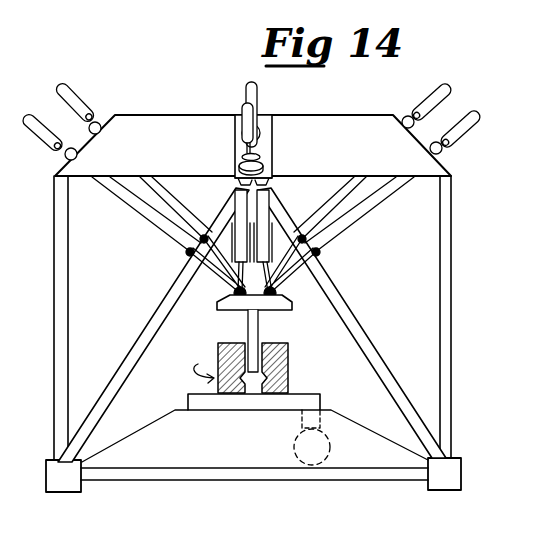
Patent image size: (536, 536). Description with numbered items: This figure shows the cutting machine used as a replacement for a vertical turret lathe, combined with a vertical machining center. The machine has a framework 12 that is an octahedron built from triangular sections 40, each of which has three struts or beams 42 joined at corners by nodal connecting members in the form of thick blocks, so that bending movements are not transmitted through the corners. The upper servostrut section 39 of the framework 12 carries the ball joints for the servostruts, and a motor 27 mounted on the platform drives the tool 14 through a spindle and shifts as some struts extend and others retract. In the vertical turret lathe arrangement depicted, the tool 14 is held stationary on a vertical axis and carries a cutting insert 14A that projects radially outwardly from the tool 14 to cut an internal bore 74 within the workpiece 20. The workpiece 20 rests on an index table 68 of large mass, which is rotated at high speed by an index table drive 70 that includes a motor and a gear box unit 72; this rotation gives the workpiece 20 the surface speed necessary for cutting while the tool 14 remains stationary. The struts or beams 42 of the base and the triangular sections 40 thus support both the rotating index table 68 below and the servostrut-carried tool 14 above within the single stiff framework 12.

The framework 12 is at (458, 388).
The tool 14 is at (259, 325).
The cutting insert 14A is at (288, 353).
The workpiece 20 is at (190, 487).
The motor 27 is at (281, 210).
The upper servostrut section 39 is at (344, 112).
The triangular section 40 is at (425, 295).
The strut or beam 42 is at (445, 320).
The index table 68 is at (321, 402).
The index table drive 70 is at (293, 450).
The gear box unit 72 is at (301, 423).
The internal bore 74 is at (244, 345).